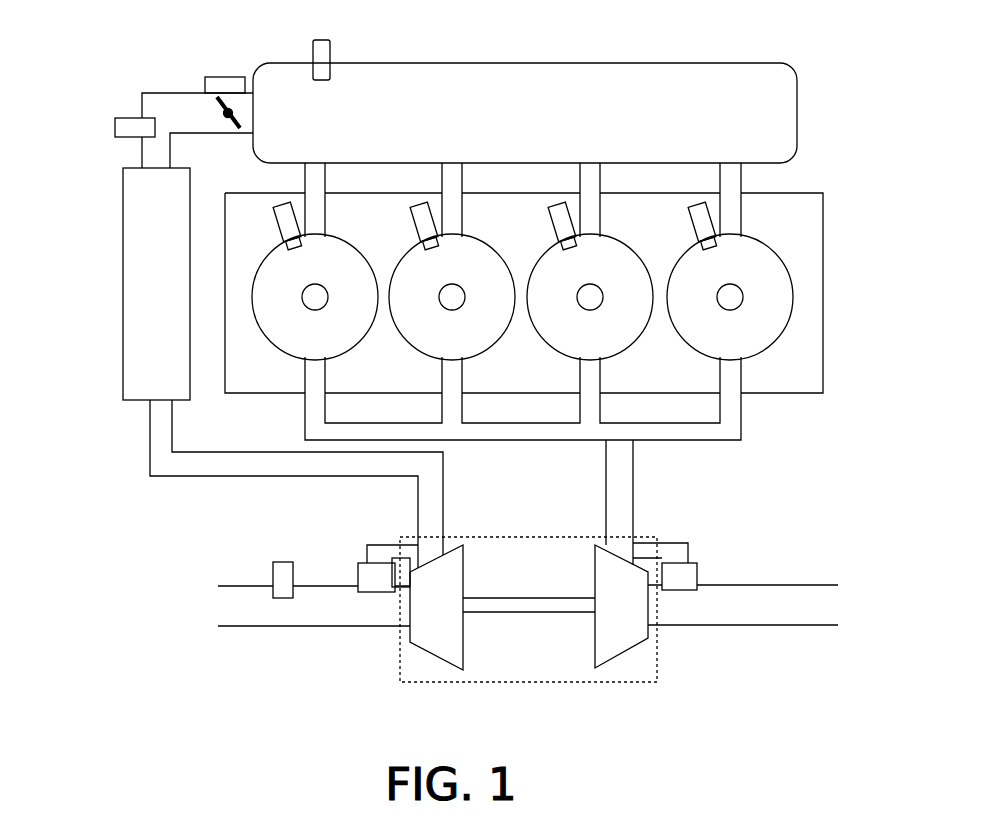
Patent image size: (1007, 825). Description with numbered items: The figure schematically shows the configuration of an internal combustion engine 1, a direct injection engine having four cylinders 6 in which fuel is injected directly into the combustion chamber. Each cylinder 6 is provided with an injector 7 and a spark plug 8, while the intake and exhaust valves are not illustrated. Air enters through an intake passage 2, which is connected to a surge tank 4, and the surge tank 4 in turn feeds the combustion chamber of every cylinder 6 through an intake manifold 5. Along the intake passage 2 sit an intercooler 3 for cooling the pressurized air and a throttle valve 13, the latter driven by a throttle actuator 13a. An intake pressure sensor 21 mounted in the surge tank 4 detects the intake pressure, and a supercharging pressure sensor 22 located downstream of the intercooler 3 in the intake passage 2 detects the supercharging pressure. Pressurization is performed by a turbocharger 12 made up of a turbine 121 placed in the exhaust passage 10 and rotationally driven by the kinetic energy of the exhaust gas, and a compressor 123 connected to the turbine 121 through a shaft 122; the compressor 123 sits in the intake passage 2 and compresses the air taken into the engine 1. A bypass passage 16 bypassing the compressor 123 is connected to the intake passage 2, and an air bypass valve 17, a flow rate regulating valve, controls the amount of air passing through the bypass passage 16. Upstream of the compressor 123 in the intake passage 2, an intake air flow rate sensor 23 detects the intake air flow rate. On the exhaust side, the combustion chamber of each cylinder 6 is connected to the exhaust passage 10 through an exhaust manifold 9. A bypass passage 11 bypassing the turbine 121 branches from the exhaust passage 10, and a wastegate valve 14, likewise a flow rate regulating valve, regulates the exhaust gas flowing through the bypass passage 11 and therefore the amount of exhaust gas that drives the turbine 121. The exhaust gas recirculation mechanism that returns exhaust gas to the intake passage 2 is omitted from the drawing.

The engine 1 is at (808, 63).
The intake passage 2 is at (228, 477).
The intercooler 3 is at (123, 262).
The surge tank 4 is at (465, 63).
The intake manifold 5 is at (305, 179).
The cylinder 6 is at (335, 238).
The injector 7 is at (272, 223).
The spark plug 8 is at (305, 286).
The exhaust manifold 9 is at (305, 408).
The exhaust passage 10 is at (633, 510).
The bypass passage 11 is at (690, 545).
The turbocharger 12 is at (491, 620).
The throttle valve 13 is at (213, 107).
The throttle actuator 13a is at (228, 77).
The wastegate valve 14 is at (700, 571).
The bypass passage 16 is at (378, 545).
The air bypass valve 17 is at (358, 576).
The intake pressure sensor 21 is at (313, 50).
The supercharging pressure sensor 22 is at (127, 118).
The intake air flow rate sensor 23 is at (283, 562).
The turbine 121 is at (622, 653).
The shaft 122 is at (527, 598).
The compressor 123 is at (428, 655).